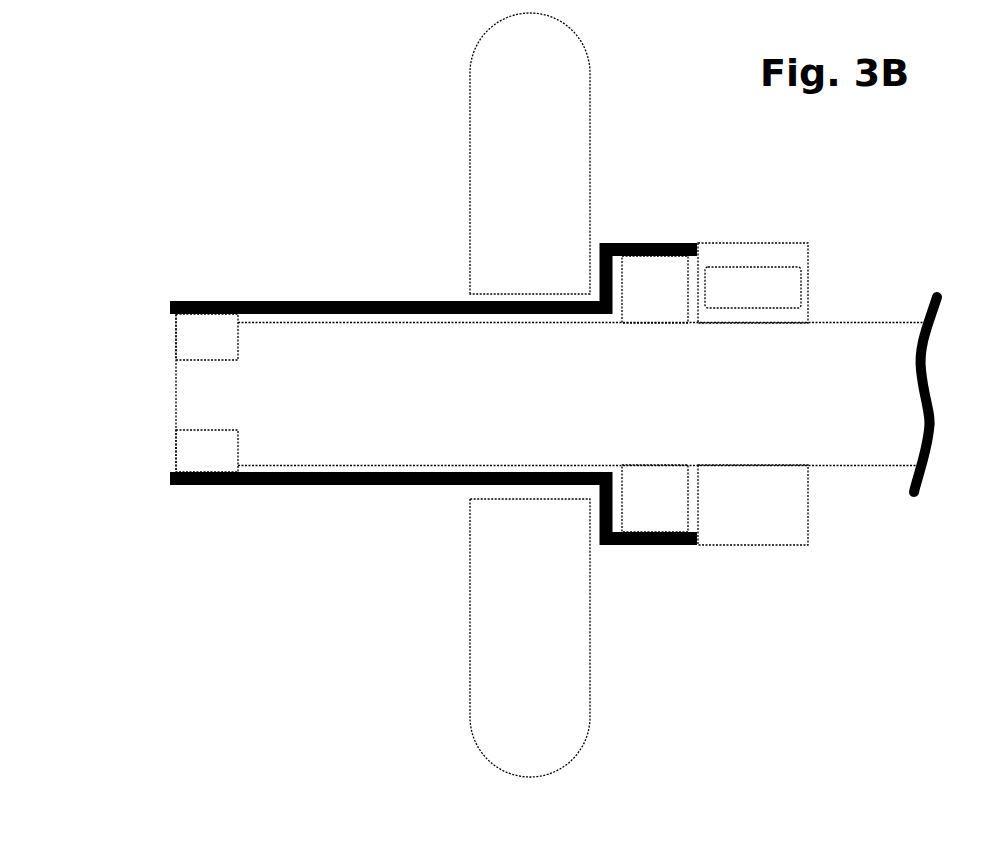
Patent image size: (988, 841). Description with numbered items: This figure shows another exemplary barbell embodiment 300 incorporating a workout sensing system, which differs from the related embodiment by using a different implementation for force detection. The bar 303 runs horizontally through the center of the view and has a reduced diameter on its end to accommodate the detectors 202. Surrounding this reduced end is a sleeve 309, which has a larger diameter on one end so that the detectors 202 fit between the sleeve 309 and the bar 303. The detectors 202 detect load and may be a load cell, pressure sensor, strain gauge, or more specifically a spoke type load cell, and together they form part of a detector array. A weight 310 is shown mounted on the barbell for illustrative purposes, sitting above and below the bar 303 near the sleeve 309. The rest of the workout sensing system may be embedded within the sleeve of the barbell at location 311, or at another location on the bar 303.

The electrosurgical device / assembly 300 is at (102, 74).
The sleeve 309 is at (236, 278).
The bar 303 is at (556, 394).
The detector 202 is at (432, 394).
The location 311 is at (753, 394).
The weight 310 is at (530, 395).